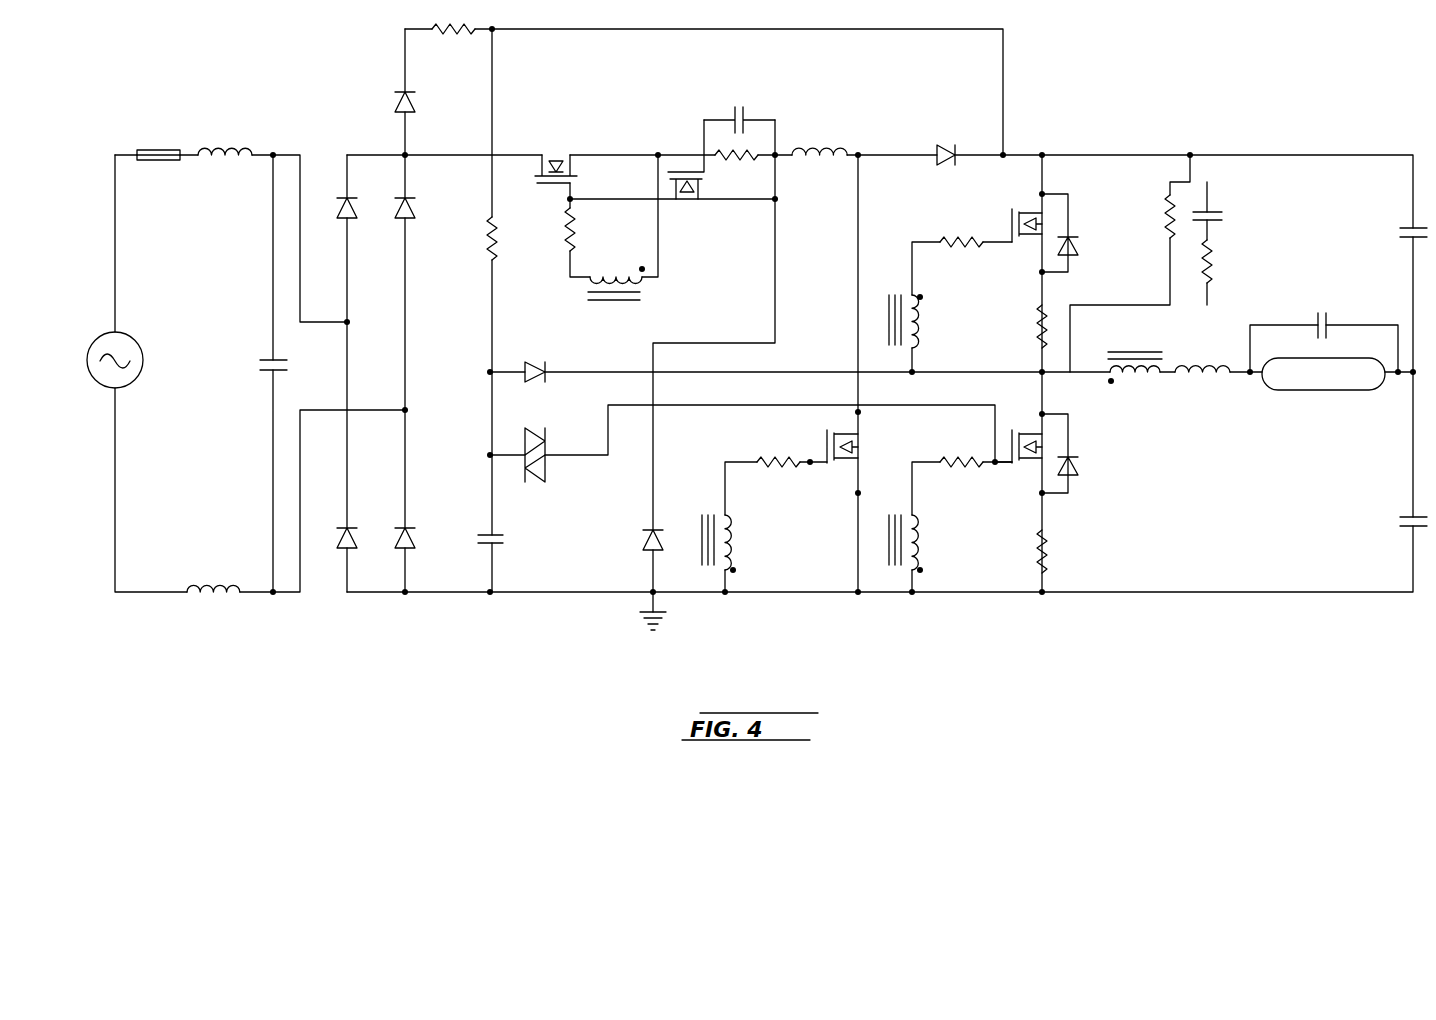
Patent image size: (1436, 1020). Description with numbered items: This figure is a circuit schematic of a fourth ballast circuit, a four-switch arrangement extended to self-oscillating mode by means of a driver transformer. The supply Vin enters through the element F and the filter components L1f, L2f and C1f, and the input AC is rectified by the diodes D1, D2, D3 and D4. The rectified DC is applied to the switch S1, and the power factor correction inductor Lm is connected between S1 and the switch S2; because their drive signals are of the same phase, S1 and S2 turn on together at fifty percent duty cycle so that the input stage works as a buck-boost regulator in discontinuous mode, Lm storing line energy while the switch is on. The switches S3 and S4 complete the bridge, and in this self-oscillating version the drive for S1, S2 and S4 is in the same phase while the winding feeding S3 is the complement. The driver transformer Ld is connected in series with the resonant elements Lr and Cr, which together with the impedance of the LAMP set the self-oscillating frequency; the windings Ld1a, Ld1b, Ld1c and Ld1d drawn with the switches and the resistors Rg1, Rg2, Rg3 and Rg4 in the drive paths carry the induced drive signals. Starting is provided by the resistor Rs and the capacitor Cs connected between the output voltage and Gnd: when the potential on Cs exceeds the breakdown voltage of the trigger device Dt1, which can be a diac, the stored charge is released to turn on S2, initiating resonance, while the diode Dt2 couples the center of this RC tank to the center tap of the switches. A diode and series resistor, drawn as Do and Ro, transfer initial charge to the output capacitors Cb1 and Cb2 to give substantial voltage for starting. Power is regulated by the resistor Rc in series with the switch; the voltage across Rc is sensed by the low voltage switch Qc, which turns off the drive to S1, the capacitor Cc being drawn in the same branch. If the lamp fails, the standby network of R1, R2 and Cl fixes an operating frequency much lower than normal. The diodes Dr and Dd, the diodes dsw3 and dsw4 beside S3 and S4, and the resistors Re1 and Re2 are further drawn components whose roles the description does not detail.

The AC input voltage source Vin is at (164, 378).
The fuse F is at (158, 140).
The input filter inductor L1f is at (231, 137).
The input filter inductor L2f is at (215, 573).
The input filter capacitor C1f is at (290, 351).
The diode D1 is at (360, 195).
The diode D2 is at (419, 195).
The diode D3 is at (360, 525).
The diode D4 is at (419, 525).
The output diode Do is at (421, 89).
The resistor Ro is at (453, 17).
The resistor Rs is at (474, 238).
The switch S1 is at (561, 155).
The gate resistor Rg1 is at (594, 229).
The drive transformer winding Ld1a is at (646, 299).
The low voltage switch Qc is at (686, 178).
The clamp capacitor Cc is at (740, 110).
The resistor Rc is at (737, 172).
The power factor correction inductor Lm is at (819, 137).
The diode Dt2 is at (555, 357).
The trigger device Dt1 is at (557, 447).
The capacitor Cs is at (504, 525).
The diode Dr is at (639, 529).
The ground Gnd is at (653, 637).
The gate resistor Rg2 is at (776, 449).
The switch S2 is at (859, 440).
The drive transformer winding Ld1b is at (744, 542).
The gate resistor Rg4 is at (961, 449).
The drive transformer winding Ld1d is at (930, 542).
The emitter resistor Re2 is at (1019, 550).
The switch S4 is at (1050, 430).
The switch diode dsw4 is at (1089, 459).
The diode Dd is at (954, 142).
The switch S3 is at (1048, 208).
The switch diode dsw3 is at (1088, 241).
The gate resistor Rg3 is at (962, 227).
The drive transformer winding Ld1c is at (928, 321).
The emitter resistor Re1 is at (1021, 326).
The standby resistor R1 is at (1155, 216).
The standby capacitor Cl is at (1215, 205).
The standby resistor R2 is at (1225, 261).
The output capacitor Cb1 is at (1396, 220).
The output capacitor Cb2 is at (1396, 507).
The driver transformer Ld is at (1144, 349).
The resonant inductor Lr is at (1204, 357).
The resonant capacitor Cr is at (1338, 314).
The lamp LAMP is at (1323, 374).